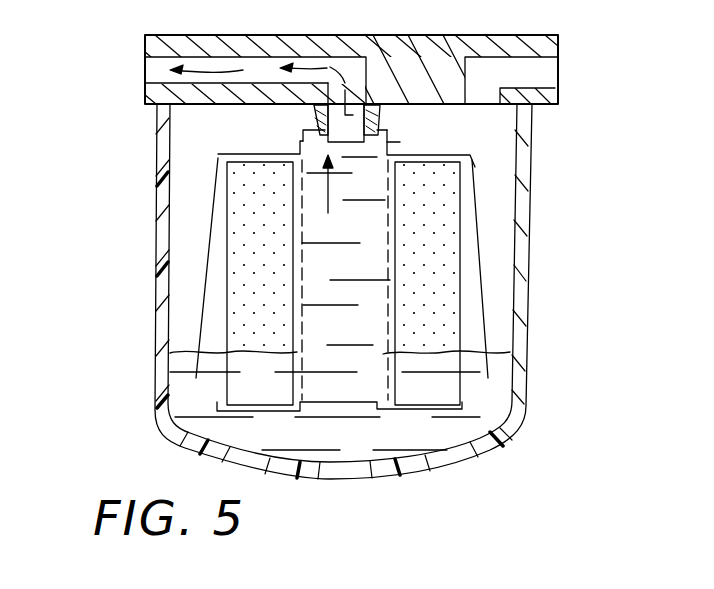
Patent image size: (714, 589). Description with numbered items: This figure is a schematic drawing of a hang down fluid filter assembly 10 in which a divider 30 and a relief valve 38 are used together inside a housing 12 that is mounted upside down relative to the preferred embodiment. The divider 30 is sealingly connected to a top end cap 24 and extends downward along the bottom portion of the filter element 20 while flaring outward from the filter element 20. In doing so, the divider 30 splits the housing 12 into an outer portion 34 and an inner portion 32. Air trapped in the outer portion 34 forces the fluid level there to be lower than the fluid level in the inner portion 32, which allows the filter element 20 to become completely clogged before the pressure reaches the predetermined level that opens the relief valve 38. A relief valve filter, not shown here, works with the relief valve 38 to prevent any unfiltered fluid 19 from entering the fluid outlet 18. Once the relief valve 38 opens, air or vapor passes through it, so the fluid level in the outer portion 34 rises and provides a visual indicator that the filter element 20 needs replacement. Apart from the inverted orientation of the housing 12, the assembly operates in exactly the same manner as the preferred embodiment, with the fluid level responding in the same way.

The hang down fluid filter assembly 10 is at (538, 368).
The housing 12 is at (132, 369).
The fluid outlet 18 is at (155, 84).
The unfiltered fluid 19 is at (483, 412).
The filter element 20 is at (238, 290).
The top end cap 24 is at (477, 170).
The divider 30 is at (483, 263).
The inner portion 32 is at (467, 230).
The outer portion 34 is at (472, 318).
The relief valve 38 is at (300, 142).